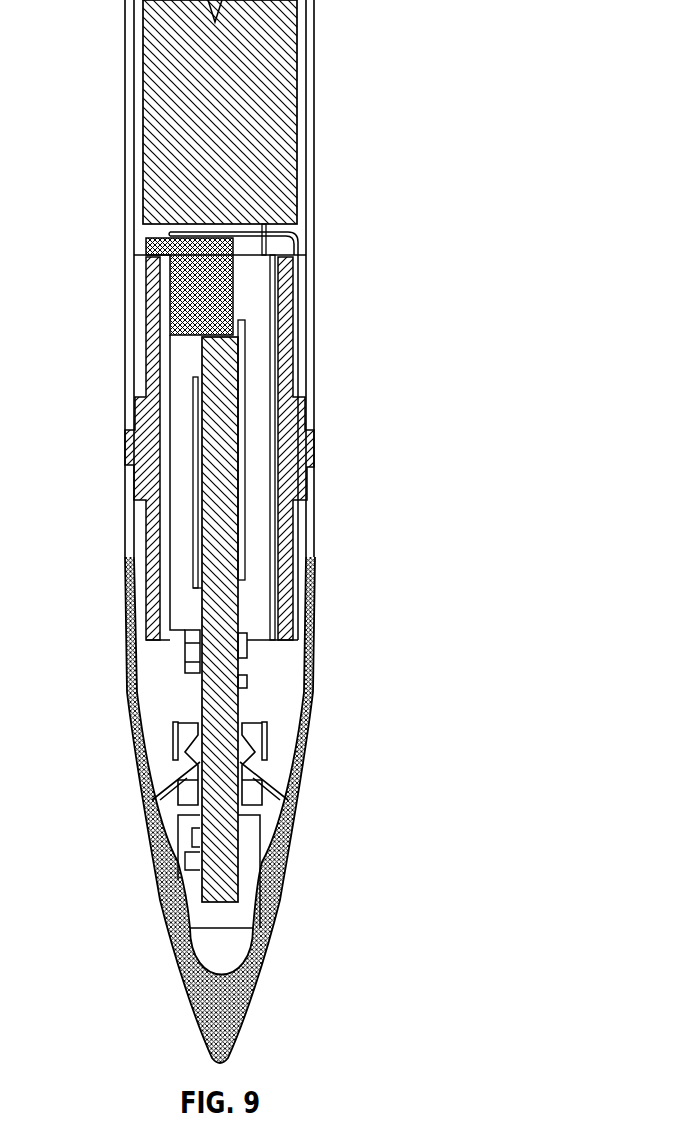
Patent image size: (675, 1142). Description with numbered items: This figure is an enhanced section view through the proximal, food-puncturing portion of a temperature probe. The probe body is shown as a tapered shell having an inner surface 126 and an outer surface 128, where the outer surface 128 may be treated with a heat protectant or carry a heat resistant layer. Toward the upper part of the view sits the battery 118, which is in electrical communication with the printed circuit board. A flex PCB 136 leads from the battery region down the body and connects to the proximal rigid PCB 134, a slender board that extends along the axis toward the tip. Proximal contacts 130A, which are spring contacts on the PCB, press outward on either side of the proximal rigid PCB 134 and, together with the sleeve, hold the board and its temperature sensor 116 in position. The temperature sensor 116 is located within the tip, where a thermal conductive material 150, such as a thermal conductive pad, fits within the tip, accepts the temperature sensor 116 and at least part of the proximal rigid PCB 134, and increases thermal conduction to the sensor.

The battery 118 is at (173, 148).
The flex PCB 136 is at (283, 235).
The proximal rigid PCB 134 is at (220, 497).
The inner surface 126 is at (143, 717).
The outer surface 128 is at (130, 692).
The proximal contacts 130A is at (142, 795).
The temperature sensor 116 is at (192, 863).
The thermal conductive material 150 is at (235, 915).